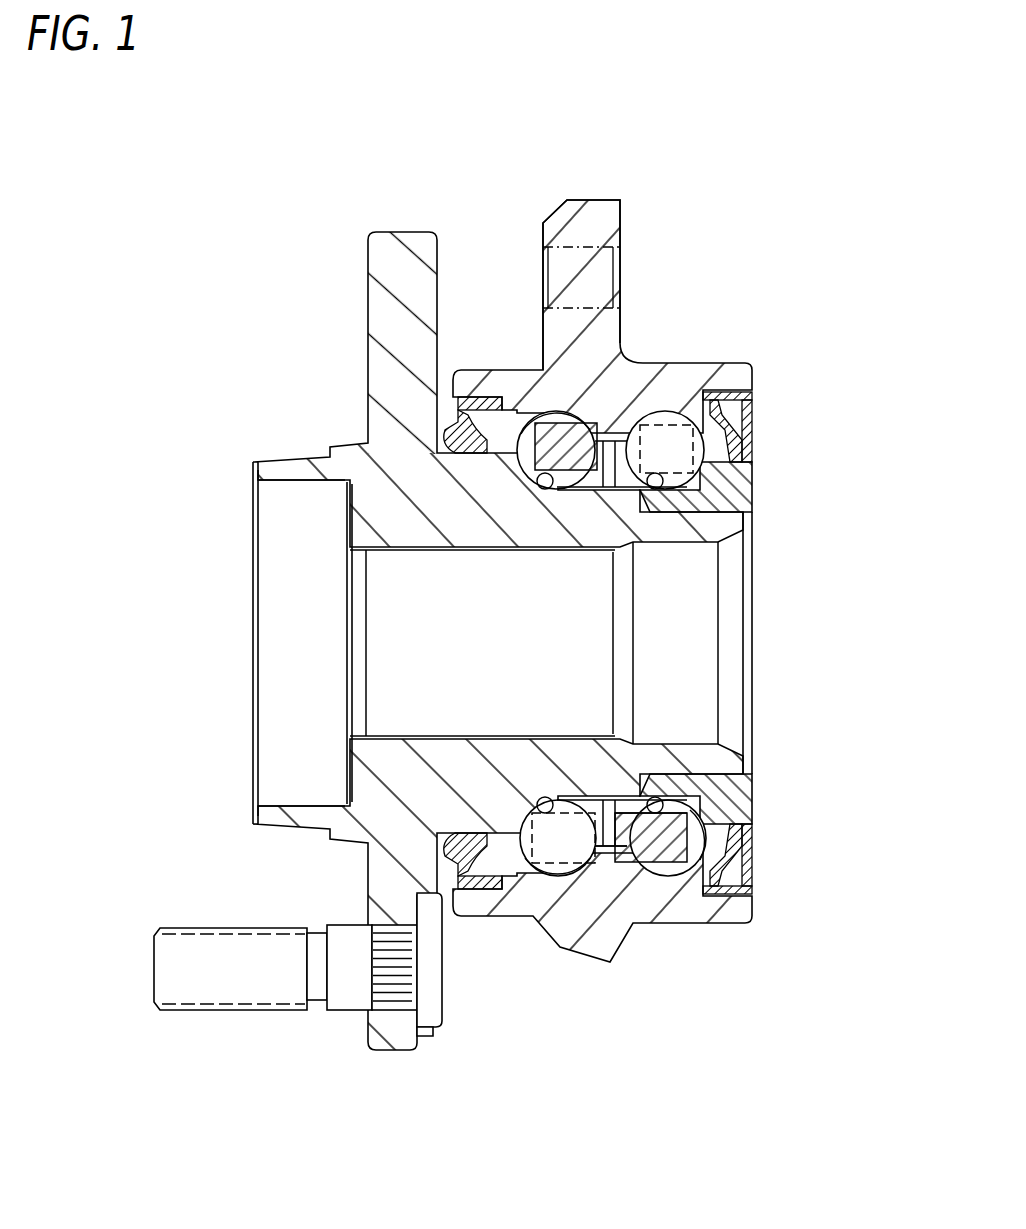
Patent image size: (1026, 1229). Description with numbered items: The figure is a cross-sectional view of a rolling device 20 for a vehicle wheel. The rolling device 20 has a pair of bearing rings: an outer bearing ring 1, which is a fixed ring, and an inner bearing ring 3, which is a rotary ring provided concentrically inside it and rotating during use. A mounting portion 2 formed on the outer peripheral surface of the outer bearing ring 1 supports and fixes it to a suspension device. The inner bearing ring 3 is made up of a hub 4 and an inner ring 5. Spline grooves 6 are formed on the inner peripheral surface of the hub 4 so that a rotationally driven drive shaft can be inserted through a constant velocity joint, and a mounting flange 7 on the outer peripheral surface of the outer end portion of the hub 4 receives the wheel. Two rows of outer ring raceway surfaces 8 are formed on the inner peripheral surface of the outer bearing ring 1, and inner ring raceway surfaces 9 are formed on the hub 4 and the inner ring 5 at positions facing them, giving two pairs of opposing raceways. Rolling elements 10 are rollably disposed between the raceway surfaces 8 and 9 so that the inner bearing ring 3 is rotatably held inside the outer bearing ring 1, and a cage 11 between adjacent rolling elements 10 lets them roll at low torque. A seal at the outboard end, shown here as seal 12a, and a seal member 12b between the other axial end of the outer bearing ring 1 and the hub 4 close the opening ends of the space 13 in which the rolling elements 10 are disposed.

The outer bearing ring 1 is at (717, 375).
The mounting portion 2 is at (583, 220).
The inner bearing ring 3 is at (377, 506).
The hub 4 is at (363, 773).
The inner ring 5 is at (733, 487).
The spline grooves 6 is at (437, 735).
The mounting flange 7 is at (380, 1030).
The outer ring raceway surfaces 8 is at (643, 848).
The inner ring raceway surfaces 9 is at (541, 487).
The rolling elements 10 is at (548, 398).
The cage 11 is at (553, 822).
The outboard seal 12a is at (755, 412).
The seal member 12b is at (440, 398).
The space 13 is at (610, 818).
The rolling device 20 is at (203, 251).